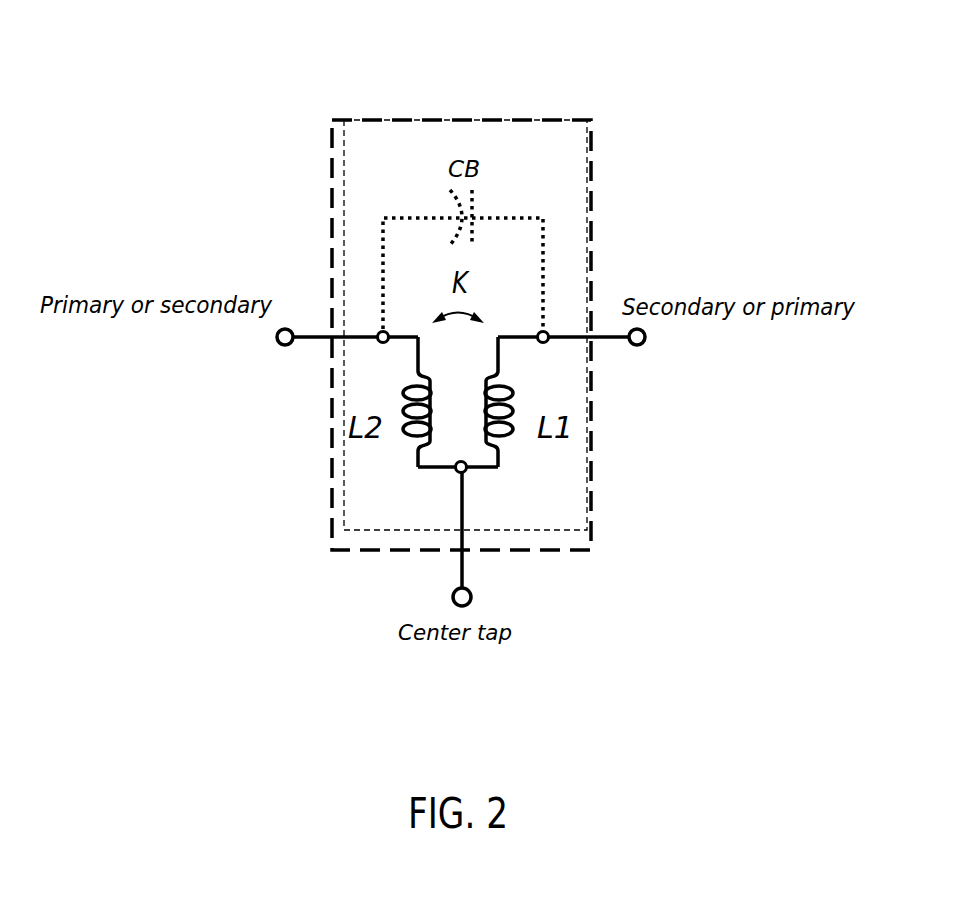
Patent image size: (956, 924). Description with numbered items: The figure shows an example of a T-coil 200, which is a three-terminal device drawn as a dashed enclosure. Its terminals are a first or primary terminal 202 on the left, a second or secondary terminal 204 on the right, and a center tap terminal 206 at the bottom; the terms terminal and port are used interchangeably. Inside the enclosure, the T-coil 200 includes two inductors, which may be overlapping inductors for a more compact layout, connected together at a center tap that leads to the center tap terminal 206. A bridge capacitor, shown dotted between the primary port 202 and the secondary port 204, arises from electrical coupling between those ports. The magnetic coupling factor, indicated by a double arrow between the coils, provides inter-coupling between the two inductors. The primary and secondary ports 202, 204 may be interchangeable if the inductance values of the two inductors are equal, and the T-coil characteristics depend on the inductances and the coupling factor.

The T-coil 200 is at (402, 118).
The first terminal 202 is at (322, 374).
The second terminal 204 is at (600, 373).
The center tap terminal 206 is at (422, 534).